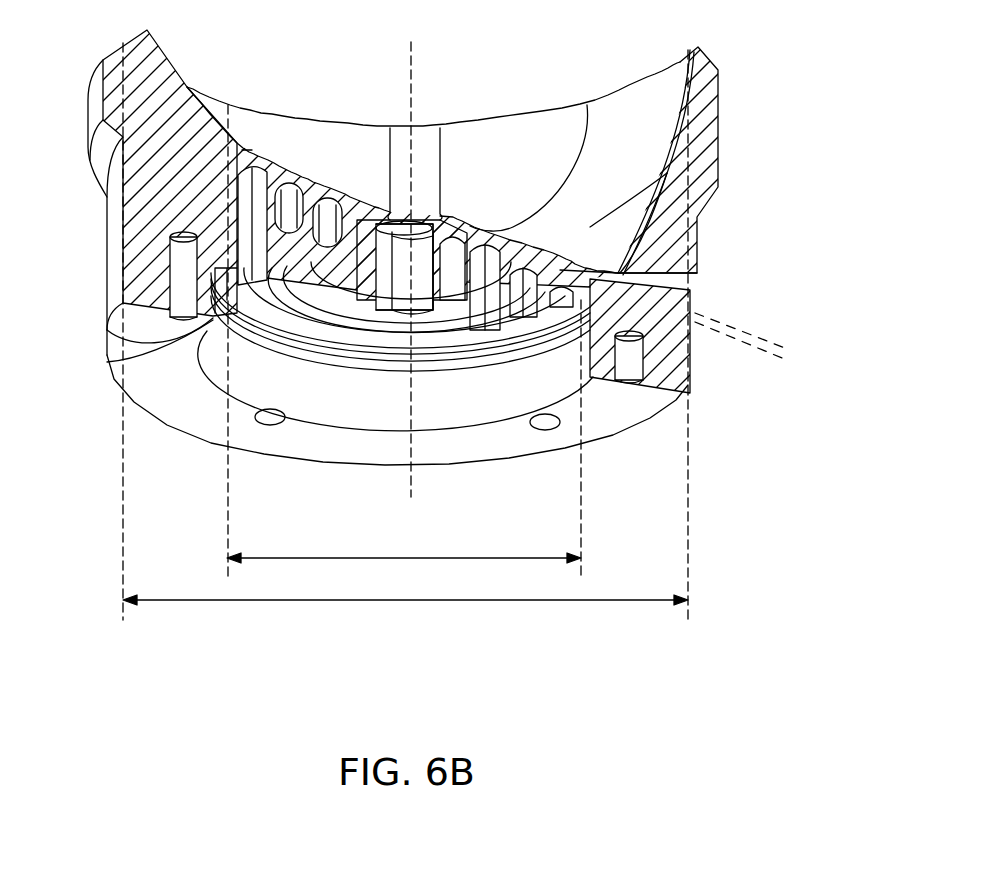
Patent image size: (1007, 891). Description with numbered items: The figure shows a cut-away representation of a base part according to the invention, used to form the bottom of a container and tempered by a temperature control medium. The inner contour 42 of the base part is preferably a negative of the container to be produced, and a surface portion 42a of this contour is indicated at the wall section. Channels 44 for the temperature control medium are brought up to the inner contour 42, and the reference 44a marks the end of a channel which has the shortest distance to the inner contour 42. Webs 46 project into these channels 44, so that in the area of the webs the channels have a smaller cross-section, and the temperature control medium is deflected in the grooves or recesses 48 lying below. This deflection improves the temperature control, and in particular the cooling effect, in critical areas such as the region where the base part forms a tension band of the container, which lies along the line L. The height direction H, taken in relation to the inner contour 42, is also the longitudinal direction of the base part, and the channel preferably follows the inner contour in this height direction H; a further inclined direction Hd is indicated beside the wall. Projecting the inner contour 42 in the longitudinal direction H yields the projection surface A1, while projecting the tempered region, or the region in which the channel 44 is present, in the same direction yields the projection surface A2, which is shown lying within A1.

The inner contour 42 is at (553, 163).
The inner wall of housing 42a is at (697, 236).
The channel 44 is at (686, 263).
The end of channel 44a is at (665, 174).
The web 46 is at (107, 327).
The recess 48 is at (107, 362).
The height direction H is at (413, 64).
The inclined axis Hd is at (782, 347).
The line L is at (247, 150).
The projection surface A1 is at (403, 603).
The projection surface A2 is at (481, 557).